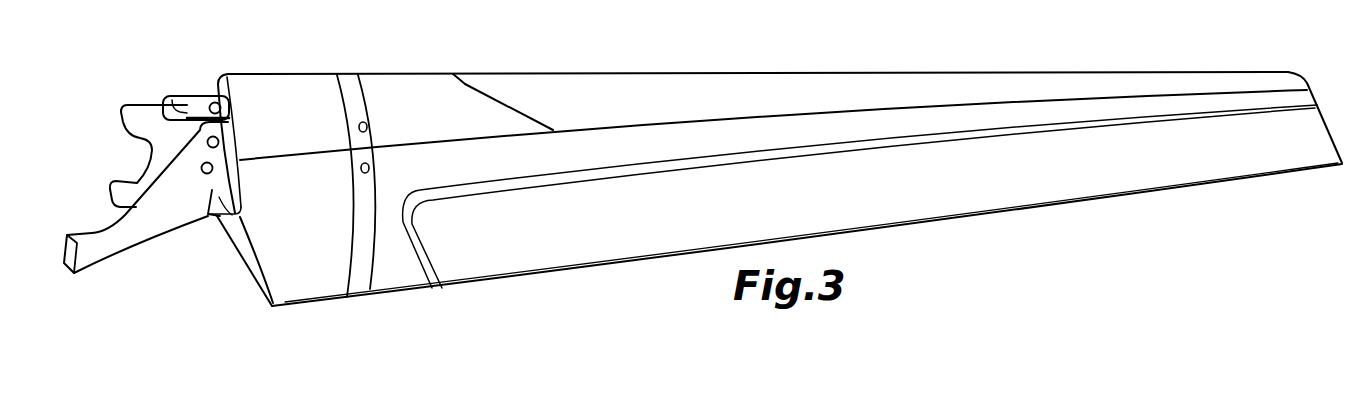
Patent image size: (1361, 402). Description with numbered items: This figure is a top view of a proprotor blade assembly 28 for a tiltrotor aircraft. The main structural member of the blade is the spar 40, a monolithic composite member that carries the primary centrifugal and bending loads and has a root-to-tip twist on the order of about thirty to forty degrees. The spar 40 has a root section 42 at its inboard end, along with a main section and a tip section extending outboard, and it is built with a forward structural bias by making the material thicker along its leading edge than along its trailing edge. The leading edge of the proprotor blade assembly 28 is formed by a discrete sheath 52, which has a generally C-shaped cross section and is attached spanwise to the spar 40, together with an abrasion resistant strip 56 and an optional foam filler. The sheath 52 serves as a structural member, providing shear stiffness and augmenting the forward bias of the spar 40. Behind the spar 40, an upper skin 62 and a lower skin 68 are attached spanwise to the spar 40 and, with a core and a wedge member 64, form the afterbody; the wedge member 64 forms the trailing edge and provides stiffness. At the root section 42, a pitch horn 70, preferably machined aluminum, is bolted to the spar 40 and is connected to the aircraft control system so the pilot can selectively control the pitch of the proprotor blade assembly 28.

The proprotor blade assembly 28 is at (811, 58).
The spar 40 is at (223, 217).
The root section 42 is at (202, 96).
The sheath 52 is at (408, 80).
The abrasion resistant strip 56 is at (630, 88).
The upper skin 62 is at (577, 258).
The wedge member 64 is at (267, 294).
The lower skin 68 is at (250, 272).
The pitch horn 70 is at (128, 243).